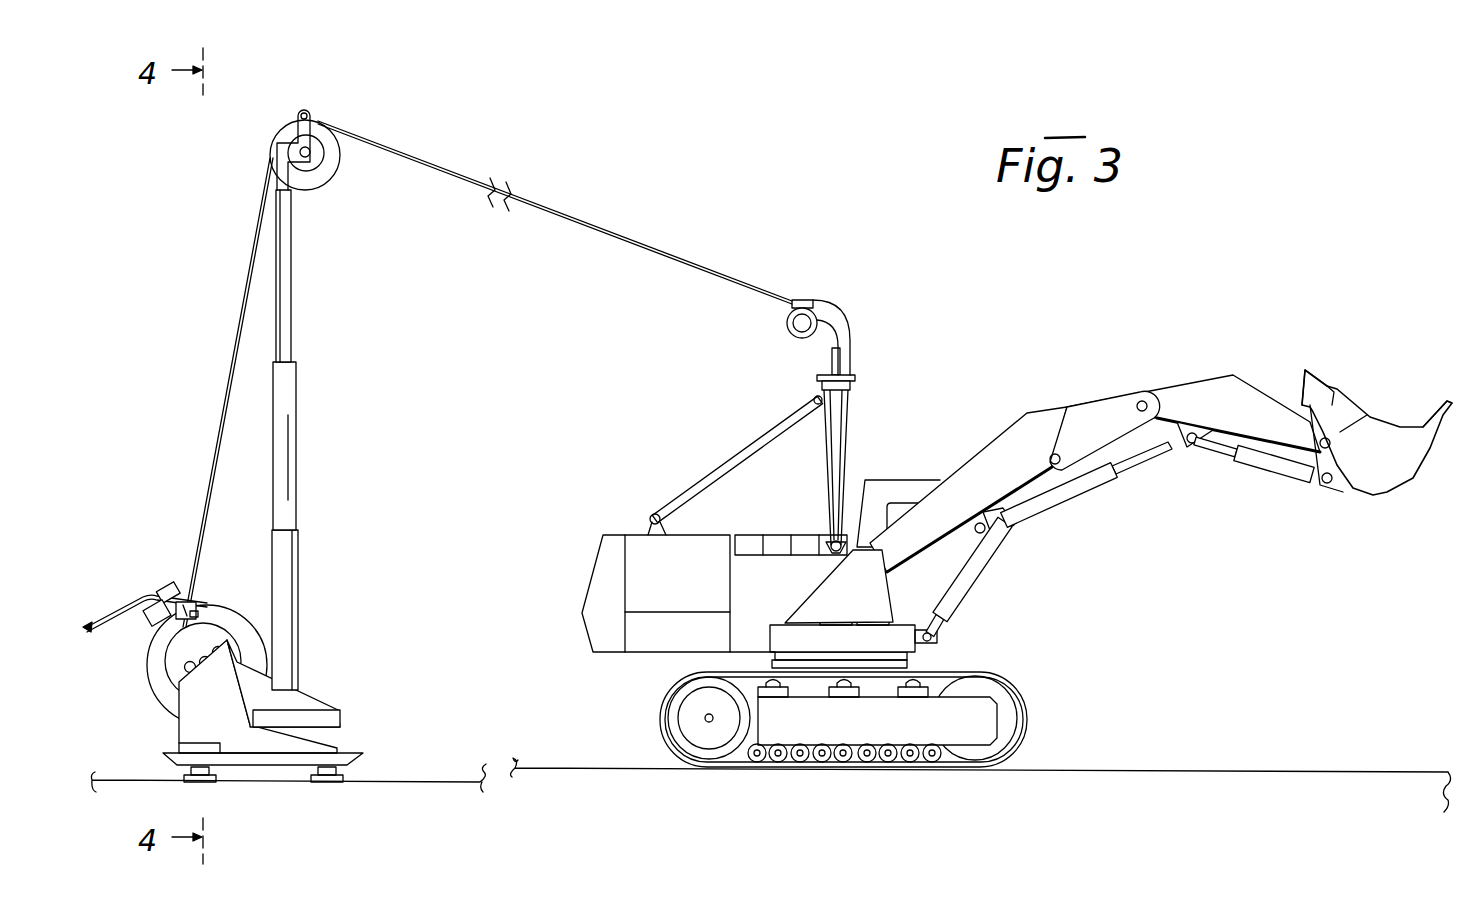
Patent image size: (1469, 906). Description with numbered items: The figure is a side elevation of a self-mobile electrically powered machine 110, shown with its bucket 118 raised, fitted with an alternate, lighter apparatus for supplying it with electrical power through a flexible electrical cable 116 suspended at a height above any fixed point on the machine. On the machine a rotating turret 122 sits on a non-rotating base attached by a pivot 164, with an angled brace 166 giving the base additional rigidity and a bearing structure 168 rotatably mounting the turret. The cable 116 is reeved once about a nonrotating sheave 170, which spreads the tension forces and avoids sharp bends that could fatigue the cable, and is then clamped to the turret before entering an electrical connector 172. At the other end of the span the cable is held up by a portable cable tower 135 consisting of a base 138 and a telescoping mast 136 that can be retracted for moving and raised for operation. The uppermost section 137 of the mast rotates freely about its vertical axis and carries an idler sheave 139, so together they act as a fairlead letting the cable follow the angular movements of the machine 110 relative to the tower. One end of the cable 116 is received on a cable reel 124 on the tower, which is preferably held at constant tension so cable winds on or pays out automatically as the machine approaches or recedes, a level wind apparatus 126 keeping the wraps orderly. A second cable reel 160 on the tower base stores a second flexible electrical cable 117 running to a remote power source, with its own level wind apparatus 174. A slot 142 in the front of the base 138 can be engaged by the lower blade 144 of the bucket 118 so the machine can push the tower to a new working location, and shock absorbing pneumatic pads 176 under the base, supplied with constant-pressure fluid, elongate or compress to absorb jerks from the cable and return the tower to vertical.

The self-mobile electrically powered machine 110 is at (980, 616).
The flexible electrical cable 116 is at (247, 283).
The second flexible electrical cable 117 is at (130, 598).
The bucket 118 is at (1398, 470).
The rotating turret 122 is at (849, 344).
The cable reel 124 is at (166, 666).
The level wind apparatus 126 is at (191, 604).
The portable cable tower 135 is at (304, 604).
The mast 136 is at (296, 378).
The uppermost section 137 is at (277, 150).
The base 138 is at (180, 733).
The idler sheave 139 is at (320, 170).
The slot 142 is at (338, 732).
The lower blade 144 is at (1442, 408).
The second cable reel 160 is at (150, 645).
The pivot 164 is at (822, 560).
The angled brace 166 is at (742, 458).
The bearing structure 168 is at (857, 380).
The nonrotating sheave 170 is at (803, 316).
The electrical connector 172 is at (849, 359).
The level wind apparatus 174 is at (170, 585).
The shock absorbing pneumatic pads 176 is at (312, 773).